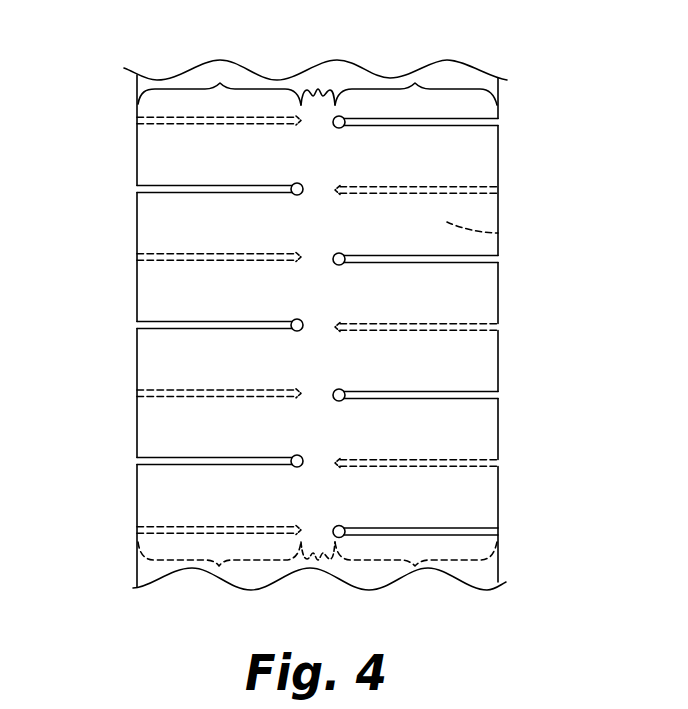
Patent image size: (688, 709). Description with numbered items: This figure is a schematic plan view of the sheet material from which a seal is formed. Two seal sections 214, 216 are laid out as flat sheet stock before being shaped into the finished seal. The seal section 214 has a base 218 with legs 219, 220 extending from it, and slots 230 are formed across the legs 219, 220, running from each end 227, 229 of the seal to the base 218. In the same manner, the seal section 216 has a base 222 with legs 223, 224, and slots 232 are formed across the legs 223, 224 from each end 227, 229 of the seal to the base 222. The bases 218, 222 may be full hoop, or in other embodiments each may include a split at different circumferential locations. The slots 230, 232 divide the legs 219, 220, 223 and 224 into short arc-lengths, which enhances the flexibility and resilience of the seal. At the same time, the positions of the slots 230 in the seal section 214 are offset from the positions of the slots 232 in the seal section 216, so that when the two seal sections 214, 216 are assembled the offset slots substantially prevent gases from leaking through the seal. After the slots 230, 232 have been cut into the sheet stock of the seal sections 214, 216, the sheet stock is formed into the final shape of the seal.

The seal section 214 is at (498, 233).
The seal section 216 is at (447, 156).
The base 218 is at (313, 570).
The leg 219 is at (415, 568).
The leg 220 is at (218, 568).
The base 222 is at (318, 89).
The leg 223 is at (415, 85).
The leg 224 is at (220, 85).
The end 227 is at (498, 440).
The end 229 is at (137, 289).
The slots 230 is at (447, 325).
The slots 232 is at (440, 392).